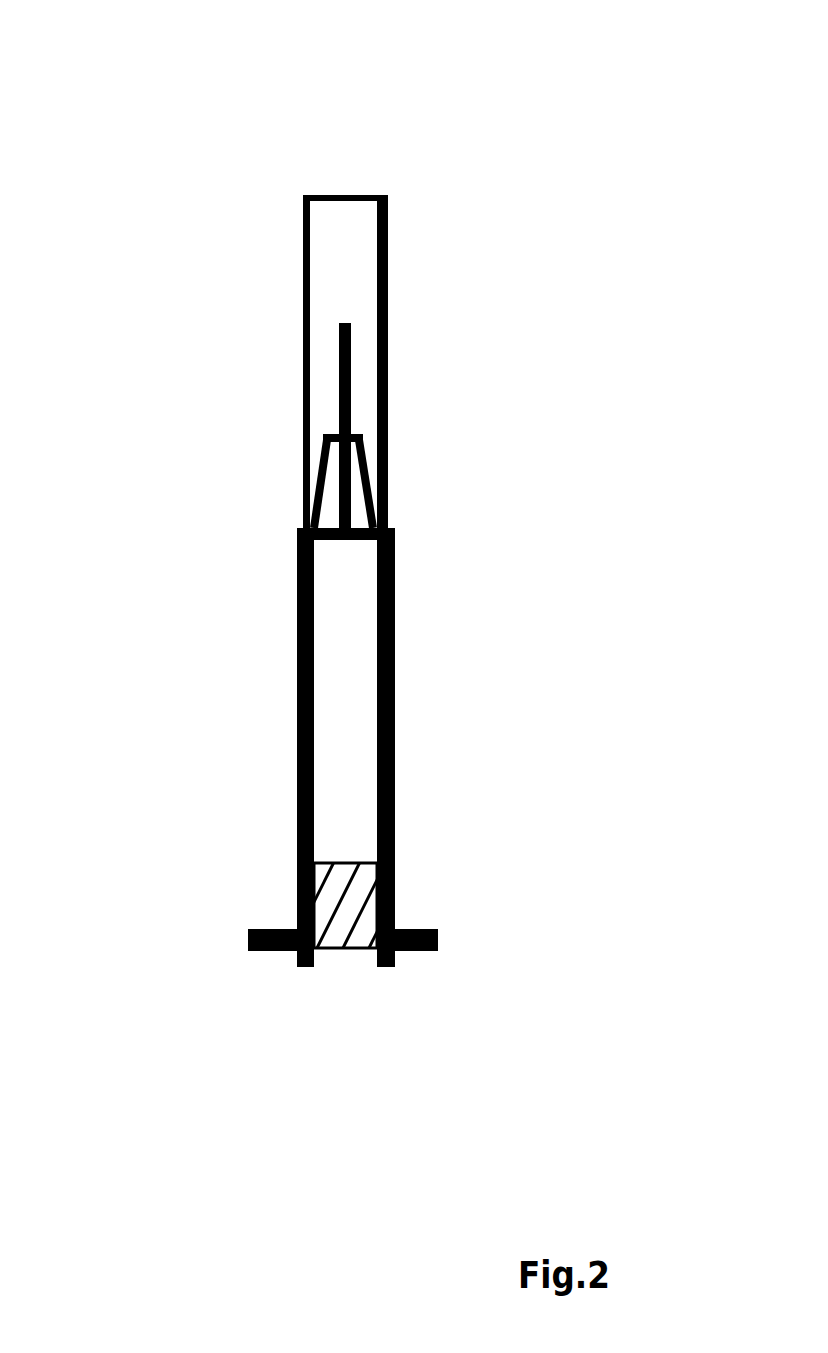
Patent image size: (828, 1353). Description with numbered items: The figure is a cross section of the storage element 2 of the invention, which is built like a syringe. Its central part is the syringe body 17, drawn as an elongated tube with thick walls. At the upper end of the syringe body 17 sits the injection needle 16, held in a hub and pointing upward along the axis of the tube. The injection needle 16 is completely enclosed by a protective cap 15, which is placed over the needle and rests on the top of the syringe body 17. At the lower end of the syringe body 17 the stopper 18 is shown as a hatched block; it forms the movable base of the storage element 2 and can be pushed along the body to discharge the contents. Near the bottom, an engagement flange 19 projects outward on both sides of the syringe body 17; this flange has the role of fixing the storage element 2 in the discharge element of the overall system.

The storage element 2 is at (402, 162).
The protective cap 15 is at (397, 350).
The injection needle 16 is at (345, 375).
The syringe body 17 is at (397, 655).
The stopper 18 is at (345, 952).
The engagement flange 19 is at (438, 940).